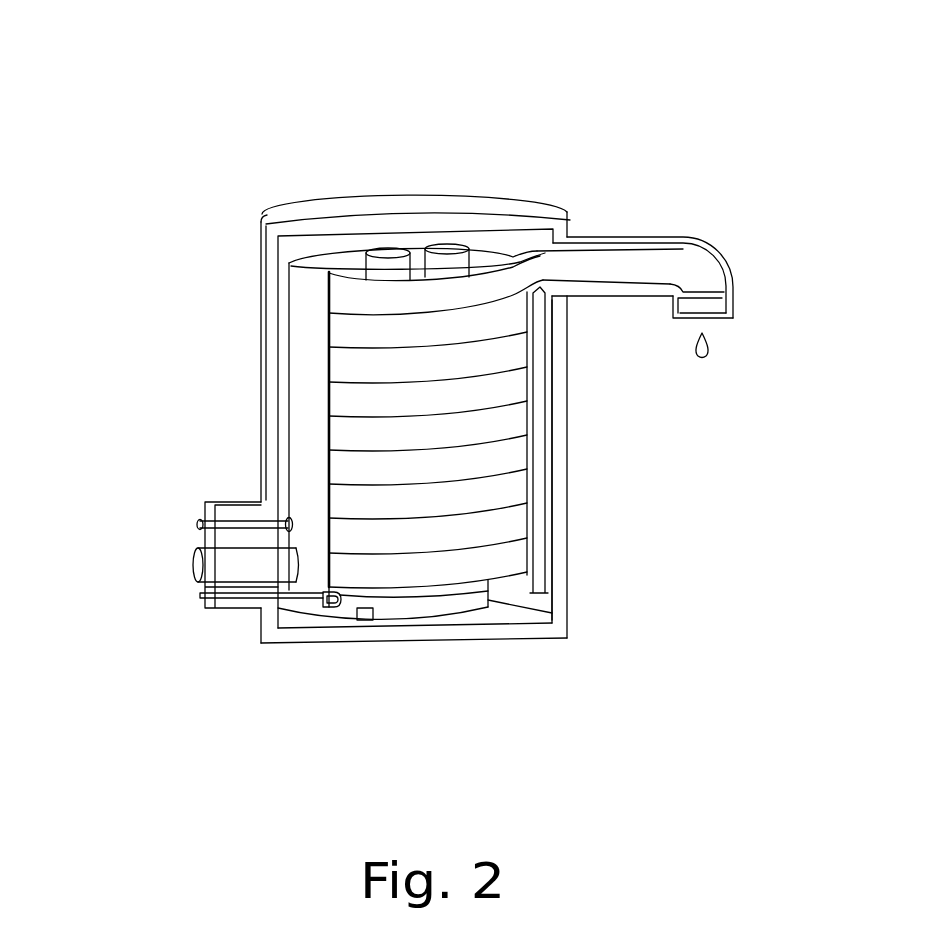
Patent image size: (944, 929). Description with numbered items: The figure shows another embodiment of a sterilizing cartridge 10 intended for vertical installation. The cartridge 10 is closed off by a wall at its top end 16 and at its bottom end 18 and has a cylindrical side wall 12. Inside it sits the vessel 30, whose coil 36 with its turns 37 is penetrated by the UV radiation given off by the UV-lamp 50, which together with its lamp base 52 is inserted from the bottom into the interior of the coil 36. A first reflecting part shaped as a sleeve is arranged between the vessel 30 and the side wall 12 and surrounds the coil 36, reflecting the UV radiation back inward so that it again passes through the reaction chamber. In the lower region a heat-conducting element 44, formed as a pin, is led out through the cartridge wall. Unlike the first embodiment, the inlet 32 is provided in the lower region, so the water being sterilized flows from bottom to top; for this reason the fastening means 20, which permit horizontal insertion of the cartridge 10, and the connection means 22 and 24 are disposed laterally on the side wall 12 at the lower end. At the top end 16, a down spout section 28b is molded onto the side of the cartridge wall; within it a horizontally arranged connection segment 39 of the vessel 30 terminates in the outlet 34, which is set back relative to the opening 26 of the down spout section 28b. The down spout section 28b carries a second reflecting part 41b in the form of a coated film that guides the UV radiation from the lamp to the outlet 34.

The cartridge 10 is at (500, 125).
The cylindrical side wall 12 is at (570, 487).
The top end 16 is at (273, 217).
The bottom end 18 is at (535, 628).
The fastening means 20 is at (210, 503).
The connection means 22 is at (192, 566).
The connection means 24 is at (196, 598).
The opening 26 is at (725, 328).
The down spout section 28b is at (683, 234).
The vessel 30 is at (550, 430).
The inlet 32 is at (268, 572).
The outlet 34 is at (736, 300).
The coil 36 is at (340, 408).
The turns 37 is at (340, 370).
The connection segment 39 is at (580, 268).
The second reflecting part 41b is at (643, 243).
The heat-conducting element 44 is at (197, 524).
The UV-lamp 50 is at (383, 268).
The lamp base 52 is at (460, 600).